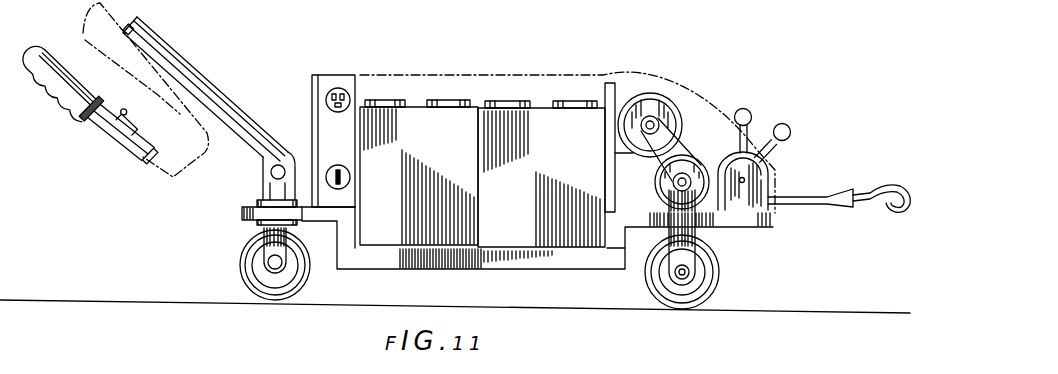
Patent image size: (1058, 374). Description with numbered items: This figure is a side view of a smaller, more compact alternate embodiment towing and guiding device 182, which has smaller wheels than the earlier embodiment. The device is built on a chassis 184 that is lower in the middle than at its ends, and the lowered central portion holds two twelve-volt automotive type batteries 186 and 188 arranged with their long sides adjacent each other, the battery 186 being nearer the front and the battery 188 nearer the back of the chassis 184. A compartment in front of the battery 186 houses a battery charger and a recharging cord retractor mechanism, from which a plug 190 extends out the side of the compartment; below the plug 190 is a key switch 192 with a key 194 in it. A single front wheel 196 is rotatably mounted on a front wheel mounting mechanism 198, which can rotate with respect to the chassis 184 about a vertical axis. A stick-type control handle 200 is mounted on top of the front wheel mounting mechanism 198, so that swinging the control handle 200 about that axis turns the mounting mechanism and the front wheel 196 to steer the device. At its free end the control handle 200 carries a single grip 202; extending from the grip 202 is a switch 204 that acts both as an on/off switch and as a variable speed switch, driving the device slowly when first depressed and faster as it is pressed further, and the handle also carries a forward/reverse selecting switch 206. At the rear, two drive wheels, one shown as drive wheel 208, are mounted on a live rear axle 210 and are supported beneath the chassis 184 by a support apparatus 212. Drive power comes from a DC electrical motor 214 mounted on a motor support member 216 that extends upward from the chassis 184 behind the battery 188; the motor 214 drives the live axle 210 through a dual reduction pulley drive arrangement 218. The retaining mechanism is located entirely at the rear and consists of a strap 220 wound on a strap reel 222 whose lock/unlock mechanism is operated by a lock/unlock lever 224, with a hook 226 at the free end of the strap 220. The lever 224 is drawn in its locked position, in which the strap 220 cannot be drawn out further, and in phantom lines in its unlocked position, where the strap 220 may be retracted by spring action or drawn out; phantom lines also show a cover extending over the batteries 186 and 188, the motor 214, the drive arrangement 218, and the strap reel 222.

The towing and guiding device 182 is at (256, 316).
The chassis 184 is at (477, 255).
The battery 186 is at (408, 117).
The battery 188 is at (530, 127).
The plug 190 is at (334, 88).
The key switch 192 is at (337, 166).
The key 194 is at (350, 179).
The front wheel 196 is at (257, 263).
The front wheel mounting mechanism 198 is at (260, 223).
The control handle 200 is at (180, 70).
The grip 202 is at (57, 50).
The switch 204 is at (43, 87).
The forward/reverse selecting switch 206 is at (138, 115).
The drive wheel 208 is at (707, 273).
The live rear axle 210 is at (676, 275).
The support apparatus 212 is at (697, 253).
The DC electrical motor 214 is at (658, 97).
The motor support member 216 is at (607, 83).
The dual reduction pulley drive arrangement 218 is at (702, 128).
The strap 220 is at (808, 197).
The strap reel 222 is at (770, 208).
The lock/unlock lever 224 is at (751, 113).
The hook 226 is at (873, 187).